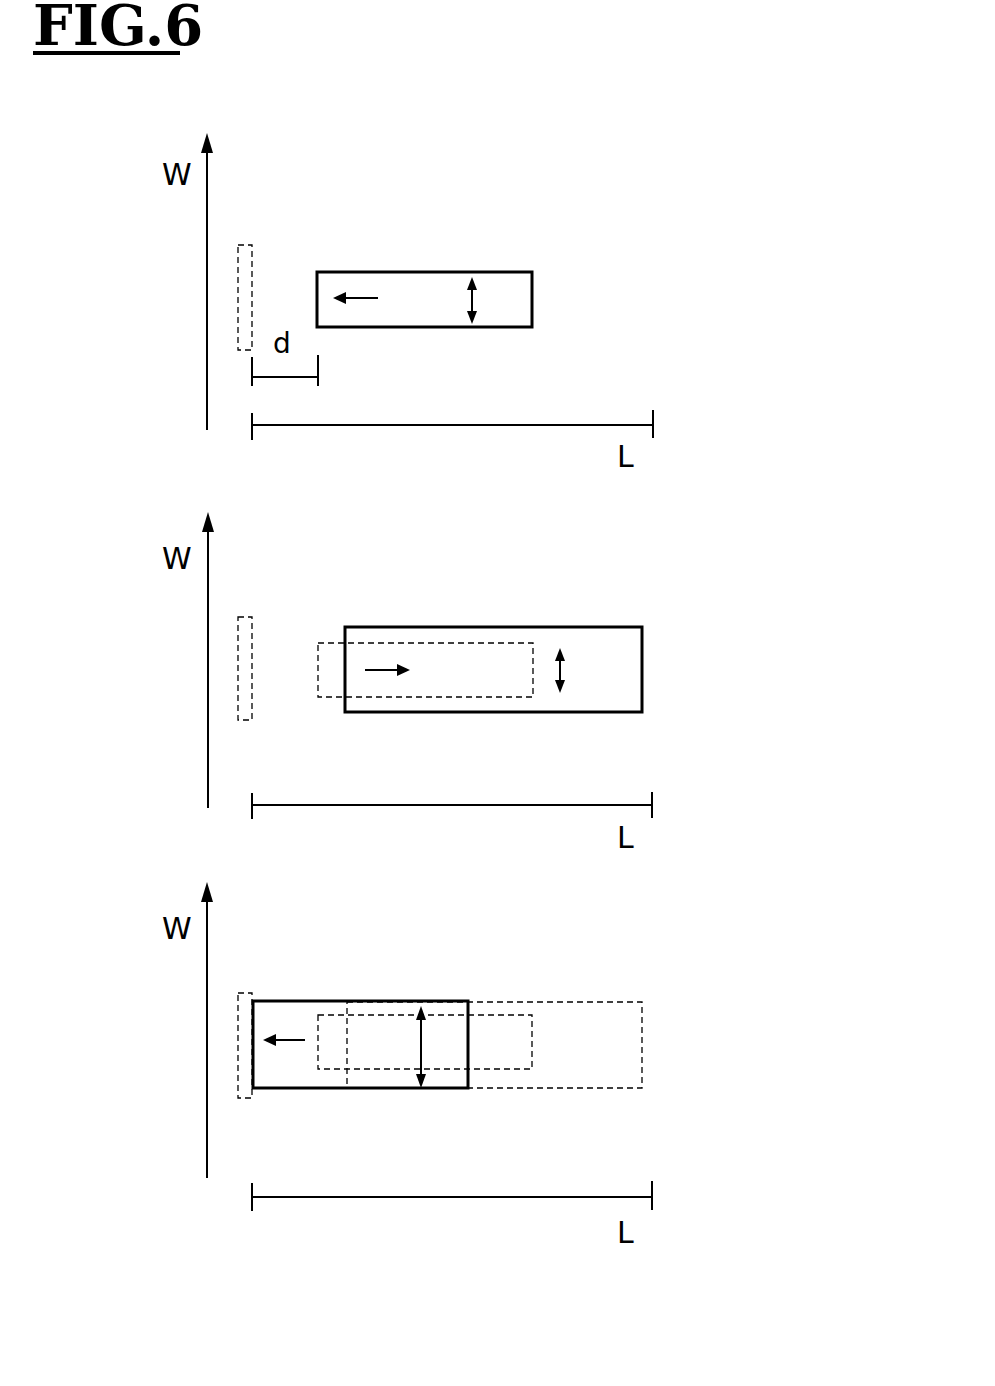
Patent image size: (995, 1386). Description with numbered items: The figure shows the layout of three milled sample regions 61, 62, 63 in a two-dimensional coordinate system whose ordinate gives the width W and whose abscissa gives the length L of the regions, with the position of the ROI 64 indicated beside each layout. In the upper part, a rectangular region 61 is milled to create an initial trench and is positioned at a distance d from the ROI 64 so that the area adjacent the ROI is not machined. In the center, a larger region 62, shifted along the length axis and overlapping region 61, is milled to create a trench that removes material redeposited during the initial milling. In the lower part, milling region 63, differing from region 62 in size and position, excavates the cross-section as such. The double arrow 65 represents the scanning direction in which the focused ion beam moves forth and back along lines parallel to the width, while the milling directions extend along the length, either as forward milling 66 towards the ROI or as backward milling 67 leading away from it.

The sample region 61 is at (518, 293).
The sample region 62 is at (605, 672).
The milling region 63 is at (292, 1013).
The ROI 64 is at (238, 293).
The double arrow 65 is at (475, 303).
The forward milling 66 is at (358, 298).
The backward milling 67 is at (380, 668).